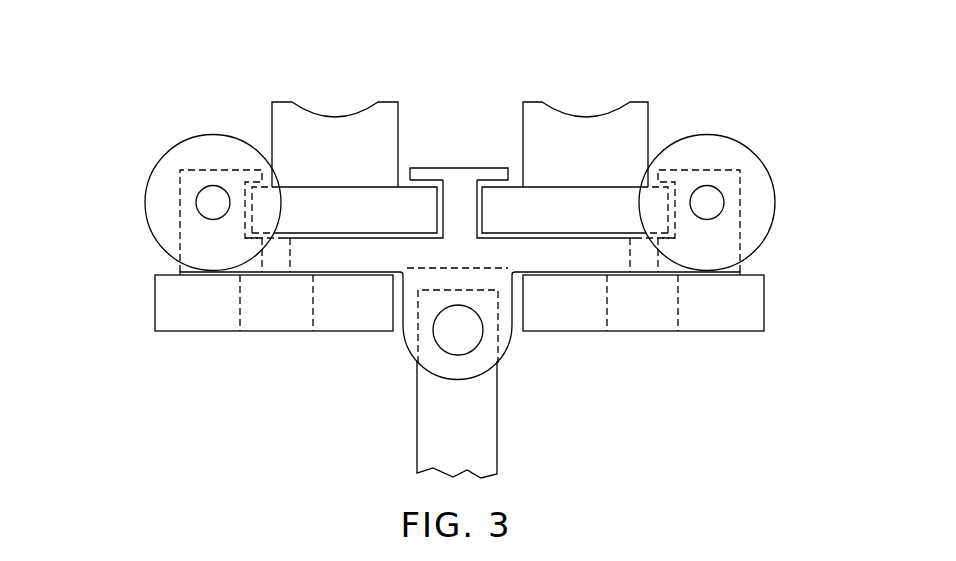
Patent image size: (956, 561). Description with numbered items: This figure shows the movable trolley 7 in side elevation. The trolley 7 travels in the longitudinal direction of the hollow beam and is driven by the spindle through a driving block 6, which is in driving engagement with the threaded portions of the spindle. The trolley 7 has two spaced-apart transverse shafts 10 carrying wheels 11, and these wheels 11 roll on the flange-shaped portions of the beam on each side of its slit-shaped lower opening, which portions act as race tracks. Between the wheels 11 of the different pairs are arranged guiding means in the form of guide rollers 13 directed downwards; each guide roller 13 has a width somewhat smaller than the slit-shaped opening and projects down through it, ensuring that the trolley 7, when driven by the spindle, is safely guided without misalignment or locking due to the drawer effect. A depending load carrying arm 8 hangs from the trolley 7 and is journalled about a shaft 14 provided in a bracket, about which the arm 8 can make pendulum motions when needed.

The driving block 6 is at (598, 127).
The trolley 7 is at (468, 167).
The load carrying arm 8 is at (430, 423).
The transverse shaft 10 is at (207, 201).
The wheel 11 is at (758, 215).
The guide roller 13 is at (352, 315).
The shaft 14 is at (470, 336).